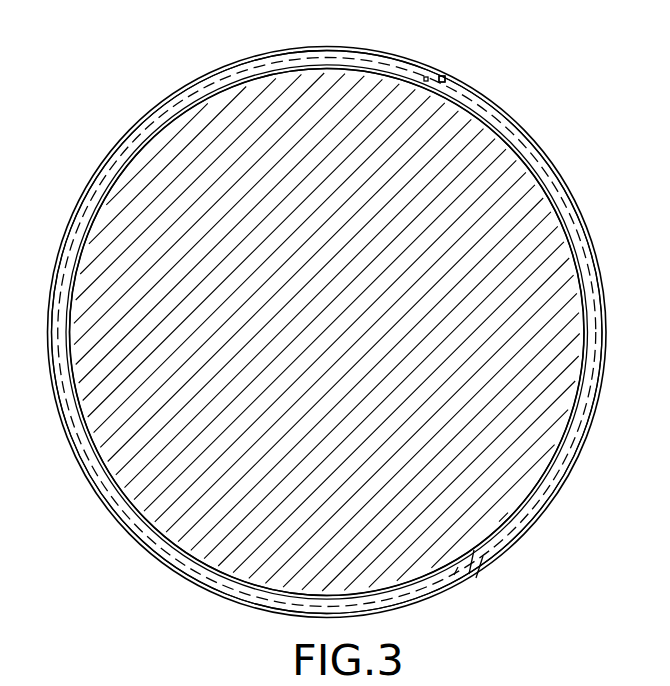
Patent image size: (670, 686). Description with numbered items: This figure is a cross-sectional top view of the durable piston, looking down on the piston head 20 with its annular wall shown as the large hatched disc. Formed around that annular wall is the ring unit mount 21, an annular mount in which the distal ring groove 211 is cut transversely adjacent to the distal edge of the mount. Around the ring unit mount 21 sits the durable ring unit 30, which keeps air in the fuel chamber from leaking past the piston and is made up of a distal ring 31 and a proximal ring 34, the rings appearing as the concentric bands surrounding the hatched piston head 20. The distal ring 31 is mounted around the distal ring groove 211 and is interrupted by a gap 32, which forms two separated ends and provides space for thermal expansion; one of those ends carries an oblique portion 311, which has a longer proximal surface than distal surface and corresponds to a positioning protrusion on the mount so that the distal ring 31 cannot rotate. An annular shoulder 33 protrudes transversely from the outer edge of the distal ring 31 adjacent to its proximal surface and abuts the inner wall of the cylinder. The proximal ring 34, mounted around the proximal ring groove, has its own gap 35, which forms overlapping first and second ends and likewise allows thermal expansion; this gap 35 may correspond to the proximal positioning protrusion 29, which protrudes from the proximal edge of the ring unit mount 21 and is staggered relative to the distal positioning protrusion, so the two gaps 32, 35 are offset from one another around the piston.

The piston head 20 is at (576, 368).
The ring unit mount 21 is at (586, 296).
The distal ring groove 211 is at (586, 255).
The proximal positioning protrusion 29 is at (446, 80).
The durable ring unit 30 is at (530, 97).
The distal ring 31 is at (543, 165).
The oblique portion 311 is at (480, 572).
The gap 32 is at (471, 578).
The shoulder 33 is at (568, 194).
The proximal ring 34 is at (473, 578).
The gap 35 is at (443, 78).